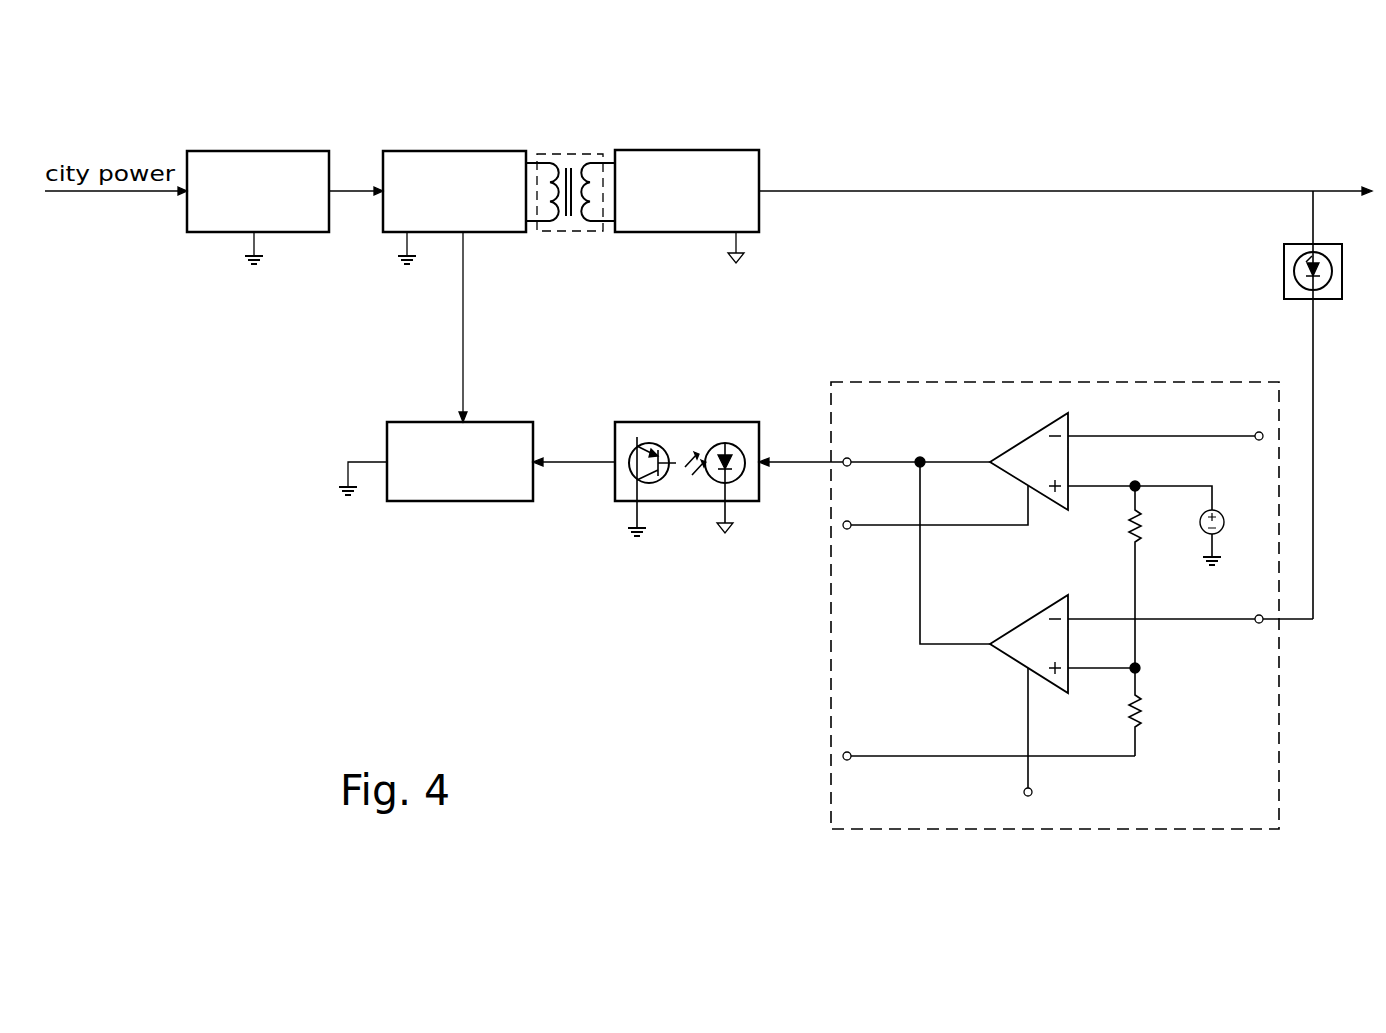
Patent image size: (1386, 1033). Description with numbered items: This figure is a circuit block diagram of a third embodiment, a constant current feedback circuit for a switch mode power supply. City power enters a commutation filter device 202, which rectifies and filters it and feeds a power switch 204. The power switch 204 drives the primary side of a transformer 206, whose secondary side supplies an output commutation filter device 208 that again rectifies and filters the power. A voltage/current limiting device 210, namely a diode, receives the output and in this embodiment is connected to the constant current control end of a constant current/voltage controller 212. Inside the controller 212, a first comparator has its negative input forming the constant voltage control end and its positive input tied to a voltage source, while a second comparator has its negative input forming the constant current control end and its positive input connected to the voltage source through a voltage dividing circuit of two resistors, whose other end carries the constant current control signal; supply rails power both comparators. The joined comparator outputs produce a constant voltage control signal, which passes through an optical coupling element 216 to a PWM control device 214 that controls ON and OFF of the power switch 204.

The commutation filter device 202 is at (295, 162).
The power switch 204 is at (505, 162).
The transformer 206 is at (572, 150).
The output commutation filter device 208 is at (738, 162).
The voltage/current limiting device 210 is at (1330, 293).
The constant current/voltage controller 212 is at (1116, 382).
The PWM control device 214 is at (505, 488).
The optical coupling element 216 is at (747, 488).